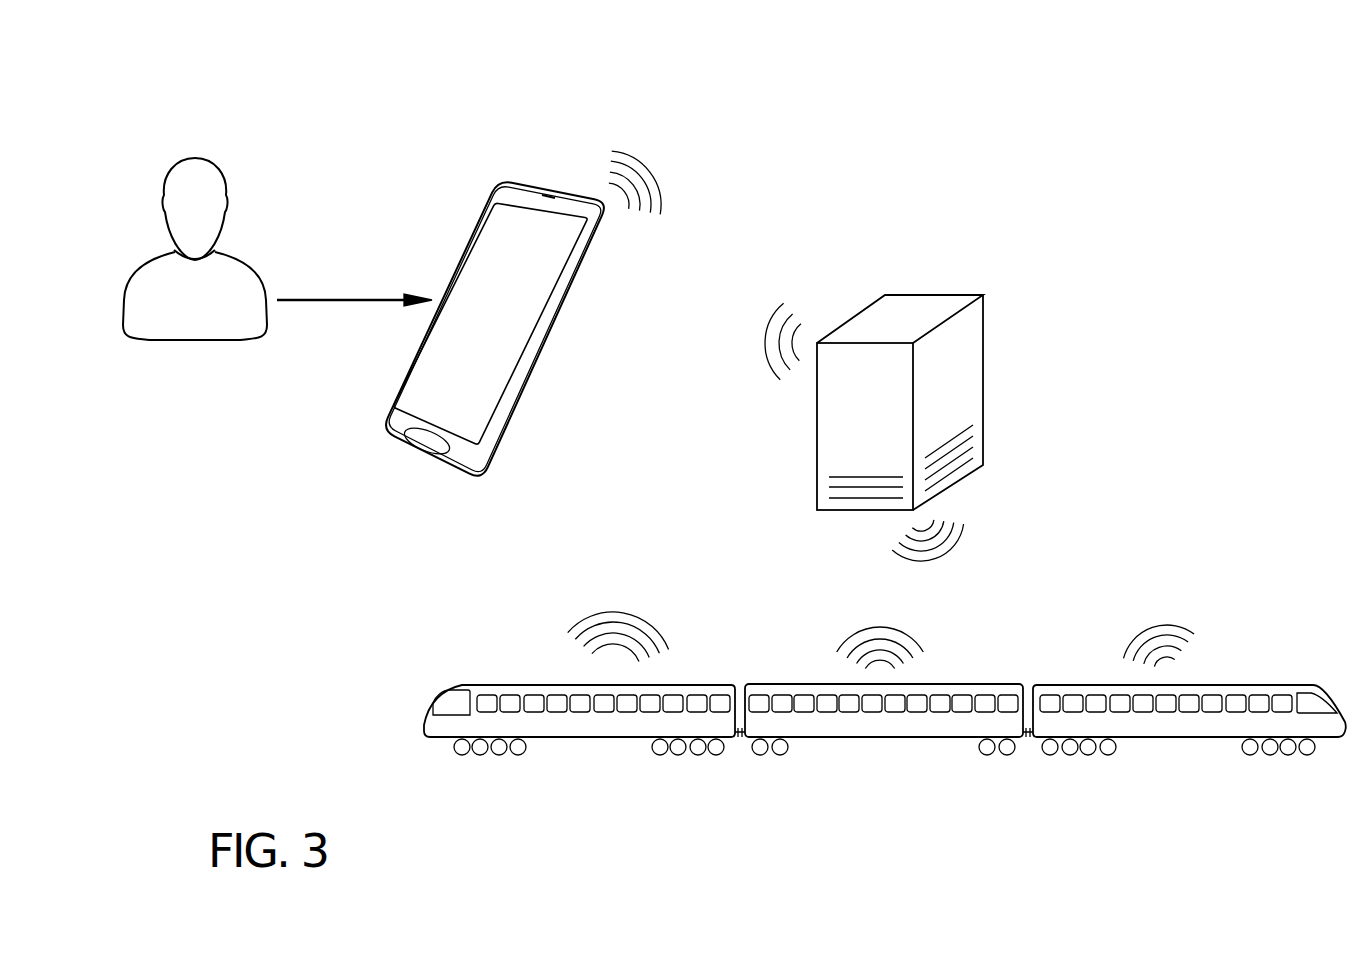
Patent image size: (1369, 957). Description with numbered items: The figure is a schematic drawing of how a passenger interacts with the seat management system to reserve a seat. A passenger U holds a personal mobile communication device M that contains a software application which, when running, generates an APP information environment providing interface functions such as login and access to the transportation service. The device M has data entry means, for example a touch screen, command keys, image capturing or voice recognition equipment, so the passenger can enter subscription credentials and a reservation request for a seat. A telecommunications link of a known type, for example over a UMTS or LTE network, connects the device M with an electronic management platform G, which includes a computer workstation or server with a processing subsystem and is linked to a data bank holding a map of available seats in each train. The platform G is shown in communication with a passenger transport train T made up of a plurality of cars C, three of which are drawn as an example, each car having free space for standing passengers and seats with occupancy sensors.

The passenger U is at (237, 186).
The APP information environment APP is at (500, 234).
The personal mobile communication device M is at (512, 313).
The electronic management platform G is at (812, 427).
The passenger transport train T is at (1026, 668).
The cars C is at (605, 737).